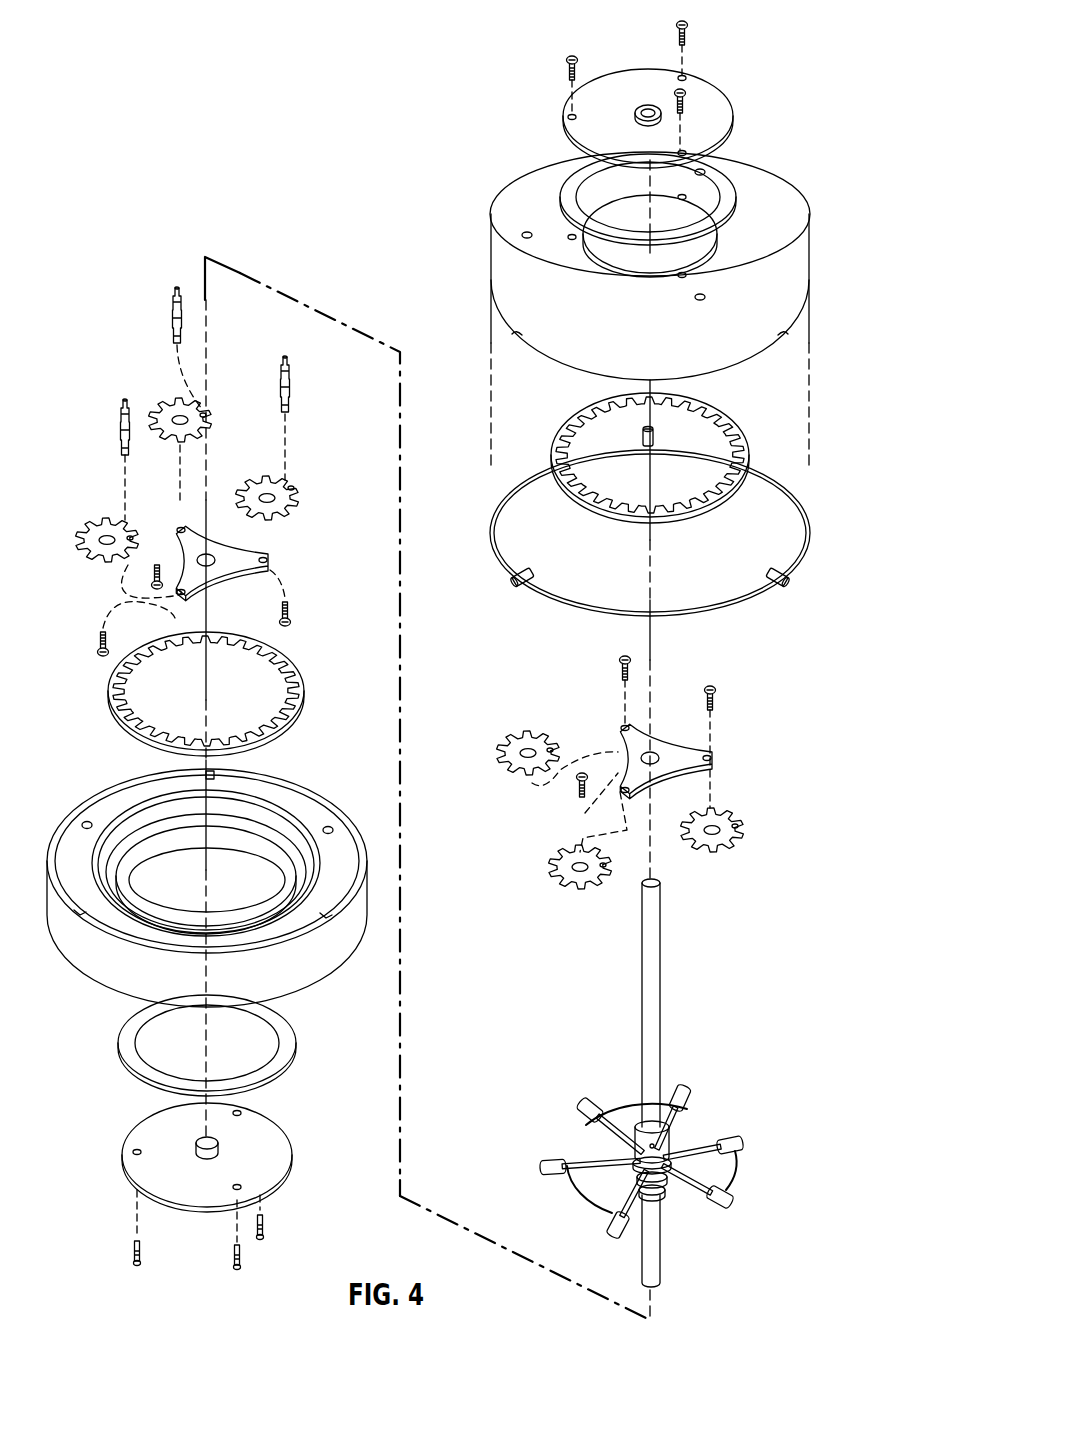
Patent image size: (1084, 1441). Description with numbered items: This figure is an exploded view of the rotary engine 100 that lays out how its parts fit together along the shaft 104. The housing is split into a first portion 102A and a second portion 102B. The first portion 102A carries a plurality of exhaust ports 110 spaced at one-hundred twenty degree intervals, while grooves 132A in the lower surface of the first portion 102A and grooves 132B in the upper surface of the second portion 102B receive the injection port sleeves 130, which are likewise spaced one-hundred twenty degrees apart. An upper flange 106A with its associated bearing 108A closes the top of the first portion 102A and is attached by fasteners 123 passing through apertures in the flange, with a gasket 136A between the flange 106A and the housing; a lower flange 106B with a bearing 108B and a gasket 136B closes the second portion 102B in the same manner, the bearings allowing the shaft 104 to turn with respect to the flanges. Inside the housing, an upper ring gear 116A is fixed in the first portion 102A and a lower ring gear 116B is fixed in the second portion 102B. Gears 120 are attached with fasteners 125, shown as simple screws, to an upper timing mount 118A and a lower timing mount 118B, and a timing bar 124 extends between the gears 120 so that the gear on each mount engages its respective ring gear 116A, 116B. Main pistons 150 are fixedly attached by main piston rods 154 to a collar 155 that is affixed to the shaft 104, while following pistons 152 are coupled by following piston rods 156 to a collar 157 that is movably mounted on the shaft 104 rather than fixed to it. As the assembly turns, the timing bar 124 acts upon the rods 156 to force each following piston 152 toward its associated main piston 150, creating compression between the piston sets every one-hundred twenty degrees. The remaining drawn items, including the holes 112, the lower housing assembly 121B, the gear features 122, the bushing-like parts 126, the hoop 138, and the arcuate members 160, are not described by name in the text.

The rotary engine 100 is at (197, 137).
The first portion of the housing 102A is at (805, 275).
The second portion of the housing 102B is at (100, 973).
The shaft 104 is at (661, 905).
The upper flange 106A is at (716, 100).
The lower flange 106B is at (290, 1145).
The bearing 108A is at (648, 105).
The bearing 108B is at (217, 1138).
The exhaust ports 110 is at (527, 232).
The holes 112 is at (85, 820).
The upper ring gear 116A is at (730, 436).
The lower ring gear 116B is at (300, 680).
The upper timing mount 118A is at (722, 757).
The lower timing mount 118B is at (273, 559).
The gears 120 is at (524, 735).
The housing assembly 121B is at (290, 800).
The gear bore 122 is at (551, 748).
The fasteners 123 is at (566, 60).
The timing bar 124 is at (172, 298).
The fasteners 125 is at (619, 658).
The bushing 126 is at (172, 318).
The injection port sleeves 130 is at (654, 447).
The grooves 132A is at (518, 340).
The grooves 132B is at (216, 774).
The gasket 136A is at (735, 187).
The gasket 136B is at (296, 1033).
The hoop 138 is at (808, 530).
The main pistons 150 is at (683, 1094).
The following pistons 152 is at (590, 1100).
The main piston rods 154 is at (685, 1132).
The collar 155 is at (662, 1128).
The following piston rods 156 is at (640, 1140).
The collar 157 is at (668, 1180).
The arcuate member 160 is at (635, 1110).